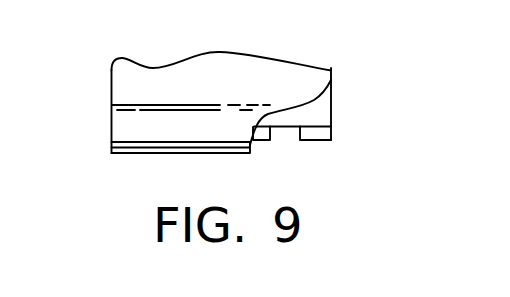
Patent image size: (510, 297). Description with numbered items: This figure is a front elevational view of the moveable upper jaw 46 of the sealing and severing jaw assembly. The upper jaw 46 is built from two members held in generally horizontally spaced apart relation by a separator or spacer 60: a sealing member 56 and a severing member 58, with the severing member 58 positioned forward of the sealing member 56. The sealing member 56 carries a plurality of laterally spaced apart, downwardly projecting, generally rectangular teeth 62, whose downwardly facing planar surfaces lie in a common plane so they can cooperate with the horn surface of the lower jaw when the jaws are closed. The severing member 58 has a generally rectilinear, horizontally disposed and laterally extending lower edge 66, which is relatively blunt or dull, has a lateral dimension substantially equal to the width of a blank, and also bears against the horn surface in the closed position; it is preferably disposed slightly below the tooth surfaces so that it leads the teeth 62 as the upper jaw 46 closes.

The upper jaw 46 is at (313, 83).
The severing member 58 is at (128, 126).
The separator or spacer 60 is at (317, 110).
The sealing member 56 is at (333, 128).
The teeth 62 is at (261, 135).
The lower edge 66 is at (170, 154).